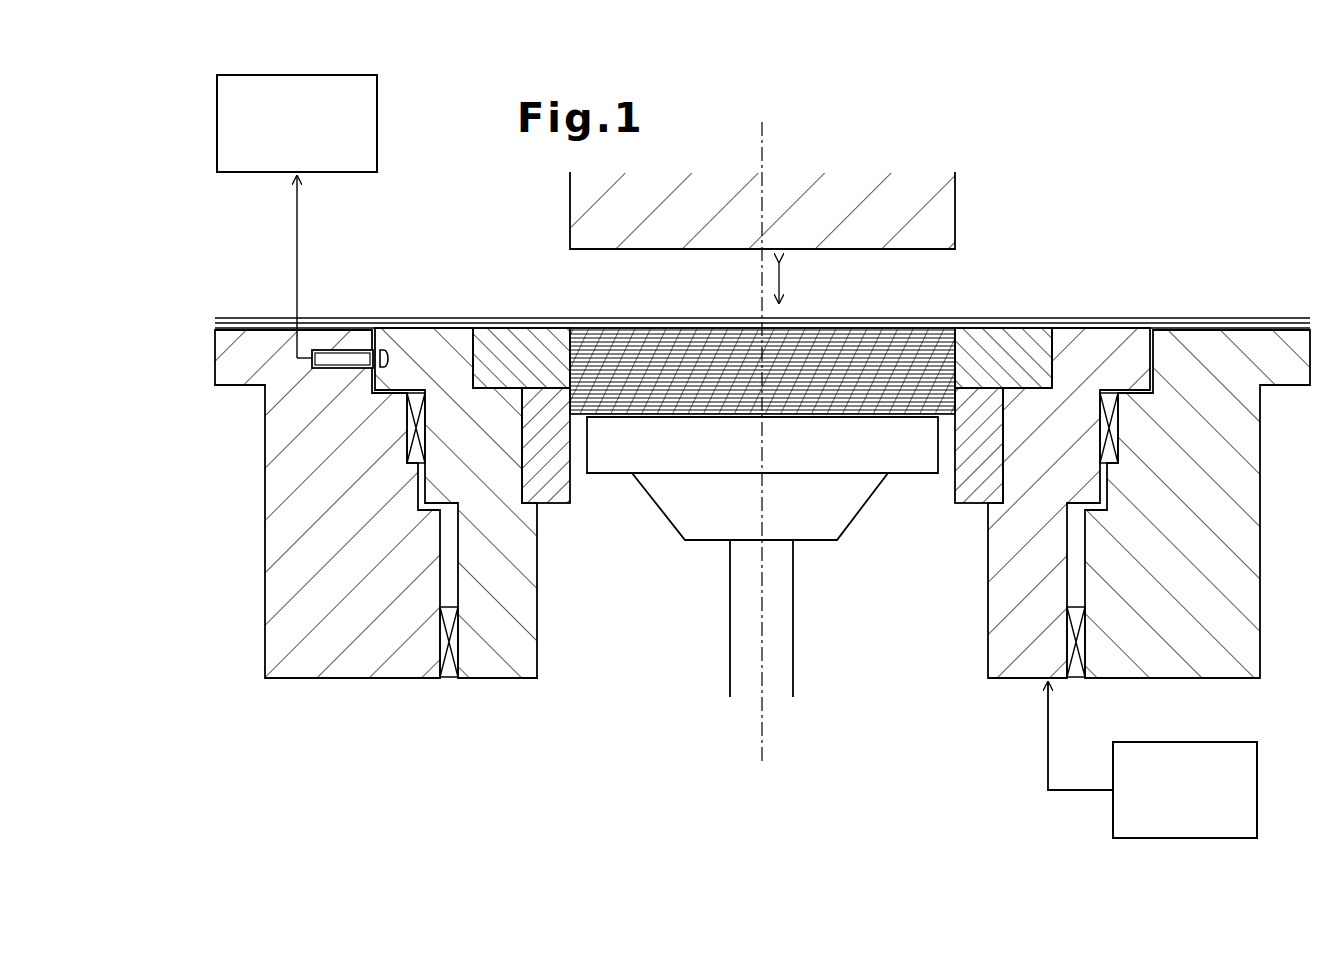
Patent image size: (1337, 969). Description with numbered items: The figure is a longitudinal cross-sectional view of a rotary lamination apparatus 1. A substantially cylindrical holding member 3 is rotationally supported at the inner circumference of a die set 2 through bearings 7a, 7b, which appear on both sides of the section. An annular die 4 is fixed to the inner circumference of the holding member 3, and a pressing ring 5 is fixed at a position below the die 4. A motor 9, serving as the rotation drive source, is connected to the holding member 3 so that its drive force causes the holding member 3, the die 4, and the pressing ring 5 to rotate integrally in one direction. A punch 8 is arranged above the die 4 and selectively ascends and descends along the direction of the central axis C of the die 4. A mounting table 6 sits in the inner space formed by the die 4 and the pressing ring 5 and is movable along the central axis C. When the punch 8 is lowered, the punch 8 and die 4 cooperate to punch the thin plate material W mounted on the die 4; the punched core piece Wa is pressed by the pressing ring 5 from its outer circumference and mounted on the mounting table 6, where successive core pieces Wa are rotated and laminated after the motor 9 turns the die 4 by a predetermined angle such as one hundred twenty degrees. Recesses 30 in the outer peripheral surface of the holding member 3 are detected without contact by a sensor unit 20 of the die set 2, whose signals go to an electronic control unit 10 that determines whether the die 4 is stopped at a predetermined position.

The rotary lamination apparatus 1 is at (1159, 186).
The die set 2 is at (267, 530).
The holding member 3 is at (490, 665).
The die 4 is at (498, 380).
The pressing ring 5 is at (547, 505).
The mounting table 6 is at (602, 467).
The bearing 7a is at (407, 443).
The bearing 7b is at (440, 650).
The punch 8 is at (955, 210).
The motor 9 is at (1258, 788).
The electronic control unit 10 is at (377, 122).
The sensor unit 20 is at (343, 352).
The recess 30 is at (389, 365).
The thin plate material W is at (448, 318).
The core piece Wa is at (598, 312).
The central axis C is at (762, 430).